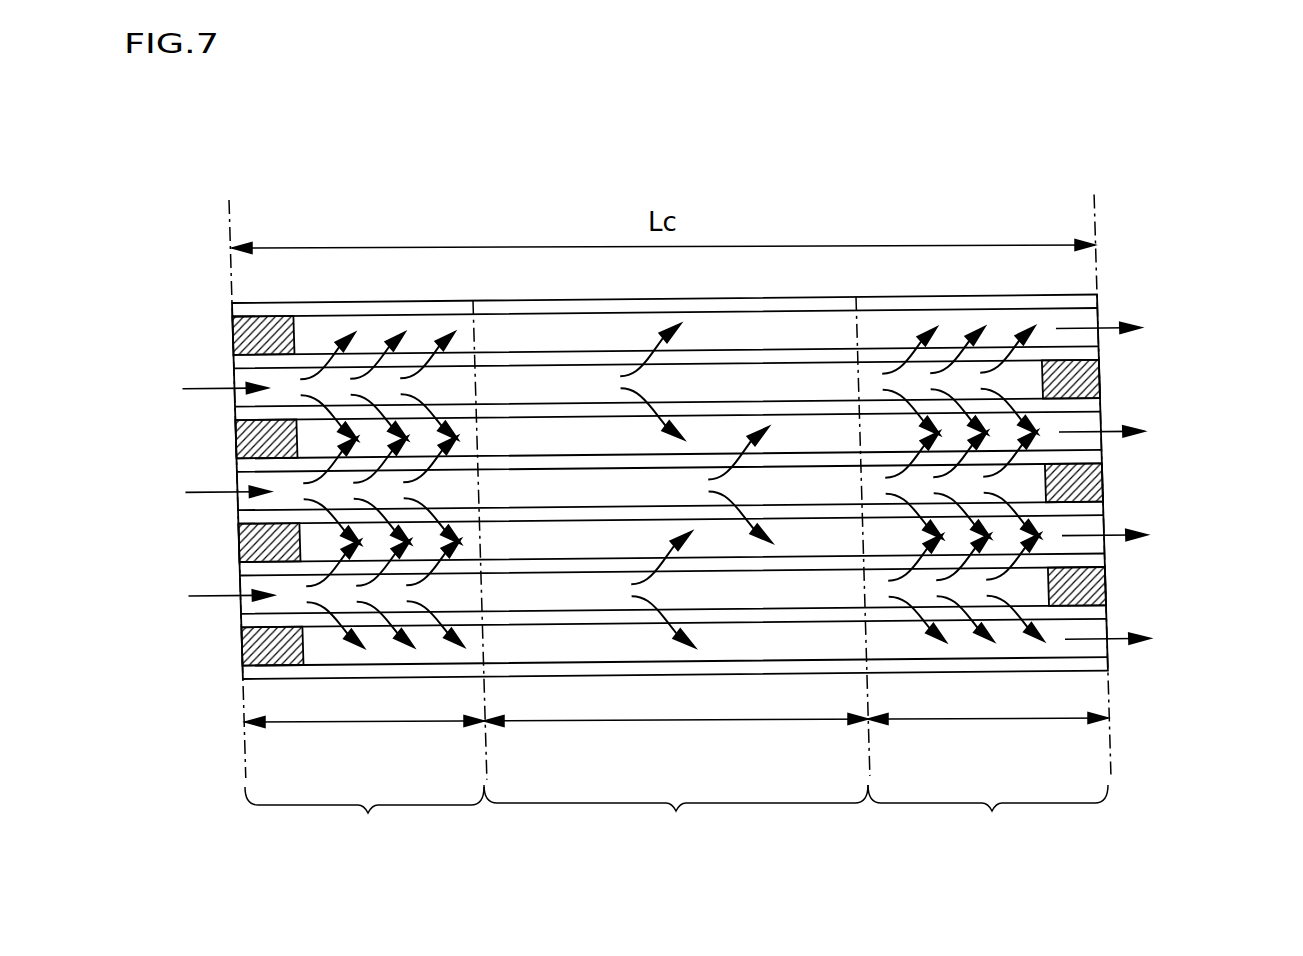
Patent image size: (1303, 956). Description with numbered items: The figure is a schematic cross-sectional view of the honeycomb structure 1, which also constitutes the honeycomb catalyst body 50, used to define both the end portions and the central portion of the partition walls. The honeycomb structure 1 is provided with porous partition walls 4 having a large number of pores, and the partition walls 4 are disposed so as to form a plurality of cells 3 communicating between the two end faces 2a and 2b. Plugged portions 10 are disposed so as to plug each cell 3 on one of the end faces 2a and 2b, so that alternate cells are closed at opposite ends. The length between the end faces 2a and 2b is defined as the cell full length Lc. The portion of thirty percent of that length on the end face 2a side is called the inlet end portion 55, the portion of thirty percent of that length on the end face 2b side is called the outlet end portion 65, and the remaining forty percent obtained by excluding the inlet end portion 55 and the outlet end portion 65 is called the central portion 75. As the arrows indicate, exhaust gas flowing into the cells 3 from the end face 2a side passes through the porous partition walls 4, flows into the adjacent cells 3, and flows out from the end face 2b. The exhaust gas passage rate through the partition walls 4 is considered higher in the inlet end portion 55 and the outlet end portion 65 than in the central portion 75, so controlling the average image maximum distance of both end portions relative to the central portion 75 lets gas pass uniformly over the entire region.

The honeycomb structure 1 is at (1152, 265).
The honeycomb catalyst body 50 is at (691, 470).
The end face 2a is at (241, 473).
The end face 2b is at (1107, 466).
The cell 3 is at (497, 445).
The partition wall 4 is at (817, 408).
The plugged portion 10 is at (1097, 374).
The inlet end portion 55 is at (364, 805).
The outlet end portion 65 is at (988, 802).
The central portion 75 is at (676, 804).